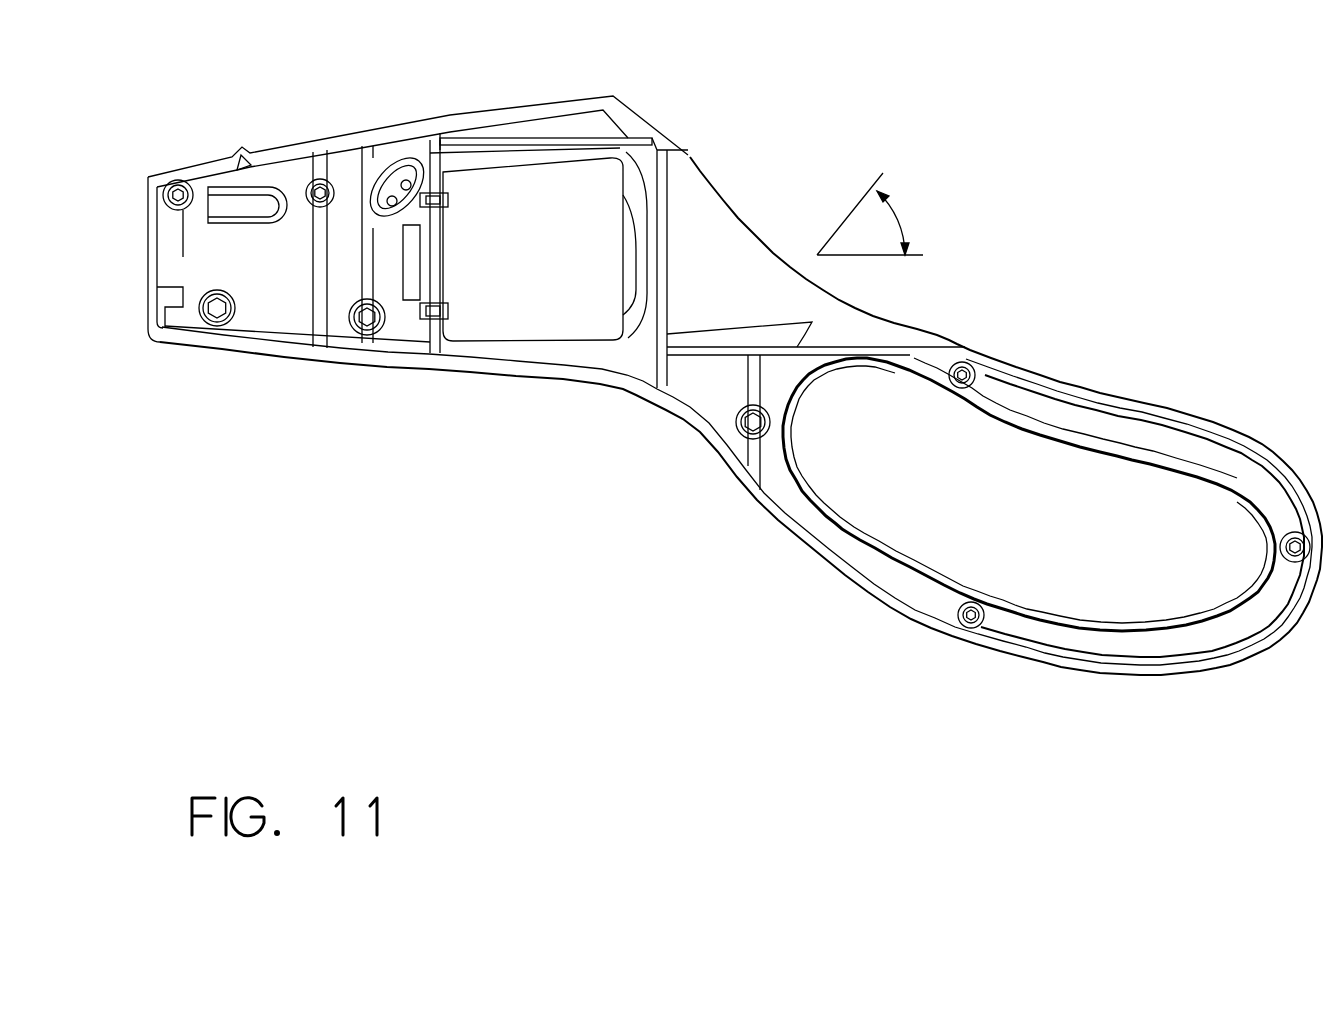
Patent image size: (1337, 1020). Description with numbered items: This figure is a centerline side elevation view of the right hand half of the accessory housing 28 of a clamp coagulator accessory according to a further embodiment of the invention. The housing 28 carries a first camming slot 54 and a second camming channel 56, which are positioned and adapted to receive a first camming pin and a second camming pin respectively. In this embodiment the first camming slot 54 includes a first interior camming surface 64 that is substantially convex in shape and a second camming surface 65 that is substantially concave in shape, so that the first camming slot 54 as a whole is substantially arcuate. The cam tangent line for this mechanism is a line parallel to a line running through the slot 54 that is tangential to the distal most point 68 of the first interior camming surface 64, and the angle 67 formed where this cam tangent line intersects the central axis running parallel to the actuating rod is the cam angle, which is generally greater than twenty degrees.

The accessory housing 28 is at (800, 110).
The first camming slot 54 is at (398, 177).
The second camming channel 56 is at (233, 200).
The first interior camming surface 64 is at (430, 190).
The second camming surface 65 is at (358, 180).
The angle 67 is at (900, 222).
The distal most point 68 is at (412, 226).